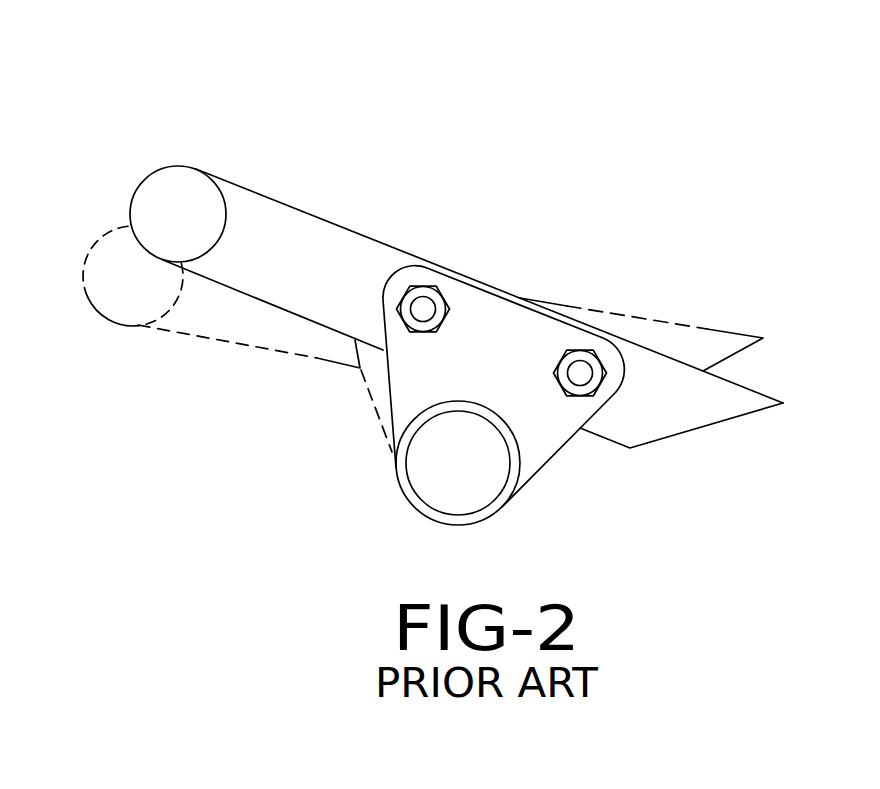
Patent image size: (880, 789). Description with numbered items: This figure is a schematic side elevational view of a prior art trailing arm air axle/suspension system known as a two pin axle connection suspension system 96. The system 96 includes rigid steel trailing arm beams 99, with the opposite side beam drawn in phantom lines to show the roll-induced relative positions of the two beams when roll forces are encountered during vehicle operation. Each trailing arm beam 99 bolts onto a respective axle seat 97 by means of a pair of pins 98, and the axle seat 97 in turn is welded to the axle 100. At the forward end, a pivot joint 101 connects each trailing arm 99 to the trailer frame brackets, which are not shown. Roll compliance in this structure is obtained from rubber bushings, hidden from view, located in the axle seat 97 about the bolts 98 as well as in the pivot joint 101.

The two pin axle connection suspension system 96 is at (86, 127).
The axle seat 97 is at (537, 437).
The pins 98 is at (428, 310).
The trailing arm beam 99 is at (316, 208).
The axle 100 is at (483, 510).
The pivot joint 101 is at (173, 185).